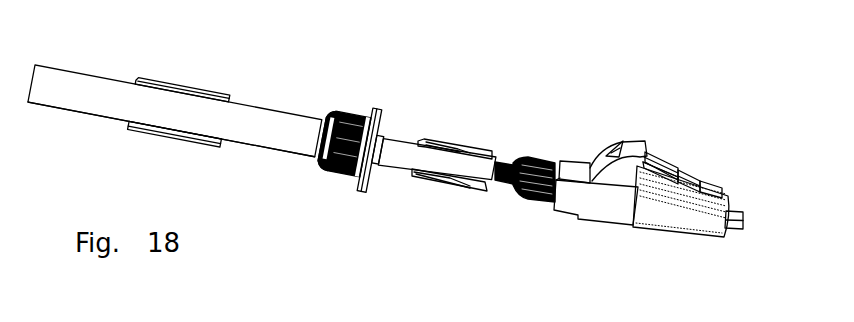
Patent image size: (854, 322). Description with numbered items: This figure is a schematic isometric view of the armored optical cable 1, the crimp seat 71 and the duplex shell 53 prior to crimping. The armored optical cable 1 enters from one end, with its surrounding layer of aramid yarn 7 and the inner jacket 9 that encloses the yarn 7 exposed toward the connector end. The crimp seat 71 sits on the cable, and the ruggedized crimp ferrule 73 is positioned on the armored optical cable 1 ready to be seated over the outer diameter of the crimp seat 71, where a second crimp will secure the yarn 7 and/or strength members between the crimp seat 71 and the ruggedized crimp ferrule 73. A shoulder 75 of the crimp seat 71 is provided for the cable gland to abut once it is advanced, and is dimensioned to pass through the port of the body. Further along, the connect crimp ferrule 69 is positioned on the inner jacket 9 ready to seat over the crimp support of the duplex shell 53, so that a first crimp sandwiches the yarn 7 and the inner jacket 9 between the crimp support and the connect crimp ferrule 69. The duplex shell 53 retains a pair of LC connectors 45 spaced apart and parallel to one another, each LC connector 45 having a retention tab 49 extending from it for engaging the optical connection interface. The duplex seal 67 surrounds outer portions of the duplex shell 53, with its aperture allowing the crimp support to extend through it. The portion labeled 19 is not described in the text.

The armored optical cable 1 is at (175, 103).
The aramid yarn 7 is at (440, 126).
The inner jacket 9 is at (432, 183).
The blade lower surface 19 is at (171, 153).
The LC connector 45 is at (709, 236).
The retention tab 49 is at (681, 157).
The duplex shell 53 is at (593, 136).
The duplex seal 67 is at (612, 235).
The connect crimp ferrule 69 is at (464, 140).
The crimp seat 71 is at (312, 166).
The ruggedized crimp ferrule 73 is at (184, 87).
The shoulder 75 is at (406, 132).